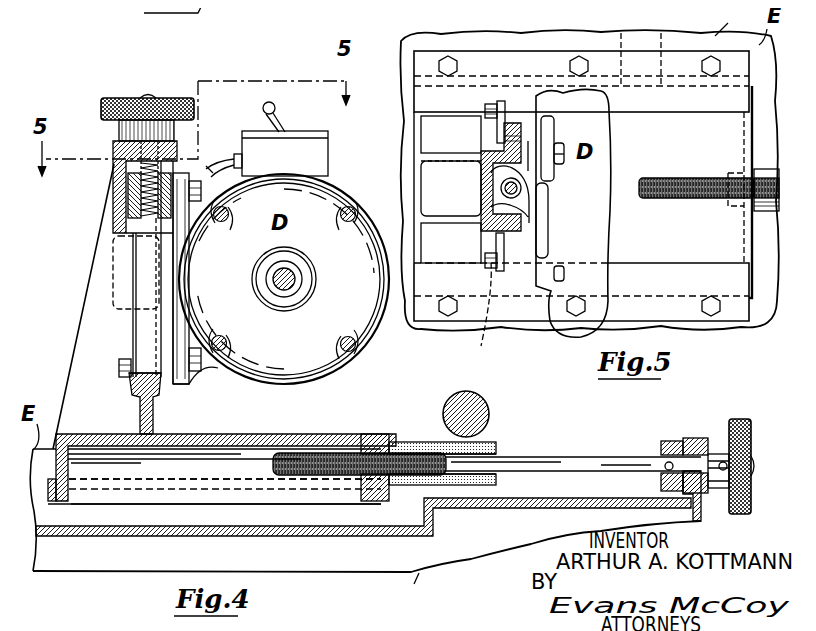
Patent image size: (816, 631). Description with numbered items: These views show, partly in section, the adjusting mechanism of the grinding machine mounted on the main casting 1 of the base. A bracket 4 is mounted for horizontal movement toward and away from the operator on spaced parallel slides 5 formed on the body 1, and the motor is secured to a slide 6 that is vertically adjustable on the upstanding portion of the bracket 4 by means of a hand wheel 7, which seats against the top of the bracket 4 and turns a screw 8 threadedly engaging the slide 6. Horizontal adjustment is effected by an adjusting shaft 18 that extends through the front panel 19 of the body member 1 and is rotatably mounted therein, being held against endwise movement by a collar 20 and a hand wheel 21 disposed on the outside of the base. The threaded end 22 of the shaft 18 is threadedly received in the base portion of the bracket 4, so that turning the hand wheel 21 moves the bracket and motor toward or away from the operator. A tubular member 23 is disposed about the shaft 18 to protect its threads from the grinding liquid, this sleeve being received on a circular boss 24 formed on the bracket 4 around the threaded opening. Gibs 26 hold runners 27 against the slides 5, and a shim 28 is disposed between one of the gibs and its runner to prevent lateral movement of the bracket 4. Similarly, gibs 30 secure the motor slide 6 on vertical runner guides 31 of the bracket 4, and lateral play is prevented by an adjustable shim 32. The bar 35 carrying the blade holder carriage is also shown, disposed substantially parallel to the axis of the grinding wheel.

In FIG. 4, the main casting 1 is at (412, 590).
In FIG. 5, the main casting 1 is at (729, 22).
In FIG. 4, the bracket 4 is at (95, 290).
In FIG. 5, the bracket 4 is at (480, 190).
In FIG. 4, the slides 5 is at (262, 503).
In FIG. 4, the slide 6 is at (168, 255).
In FIG. 5, the slide 6 is at (547, 237).
In FIG. 4, the hand wheel 7 is at (110, 97).
In FIG. 4, the screw 8 is at (135, 165).
In FIG. 5, the screw 8 is at (523, 195).
In FIG. 4, the adjusting shaft 18 is at (595, 457).
In FIG. 4, the front panel 19 is at (694, 437).
In FIG. 4, the collar 20 is at (668, 440).
In FIG. 4, the hand wheel 21 is at (740, 418).
In FIG. 4, the threaded end 22 is at (333, 452).
In FIG. 5, the threaded end 22 is at (658, 180).
In FIG. 4, the tubular member 23 is at (495, 440).
In FIG. 5, the tubular member 23 is at (753, 210).
In FIG. 4, the circular boss 24 is at (404, 448).
In FIG. 5, the circular boss 24 is at (765, 167).
In FIG. 4, the gibs 26 is at (110, 490).
In FIG. 5, the gibs 26 is at (487, 55).
In FIG. 5, the runners 27 is at (565, 188).
In FIG. 5, the shim 28 is at (612, 47).
In FIG. 4, the gibs 30 is at (130, 338).
In FIG. 5, the gibs 30 is at (490, 125).
In FIG. 4, the vertical runner guides 31 is at (142, 395).
In FIG. 5, the vertical runner guides 31 is at (525, 135).
In FIG. 5, the adjustable shim 32 is at (518, 122).
In FIG. 4, the bar 35 is at (487, 405).